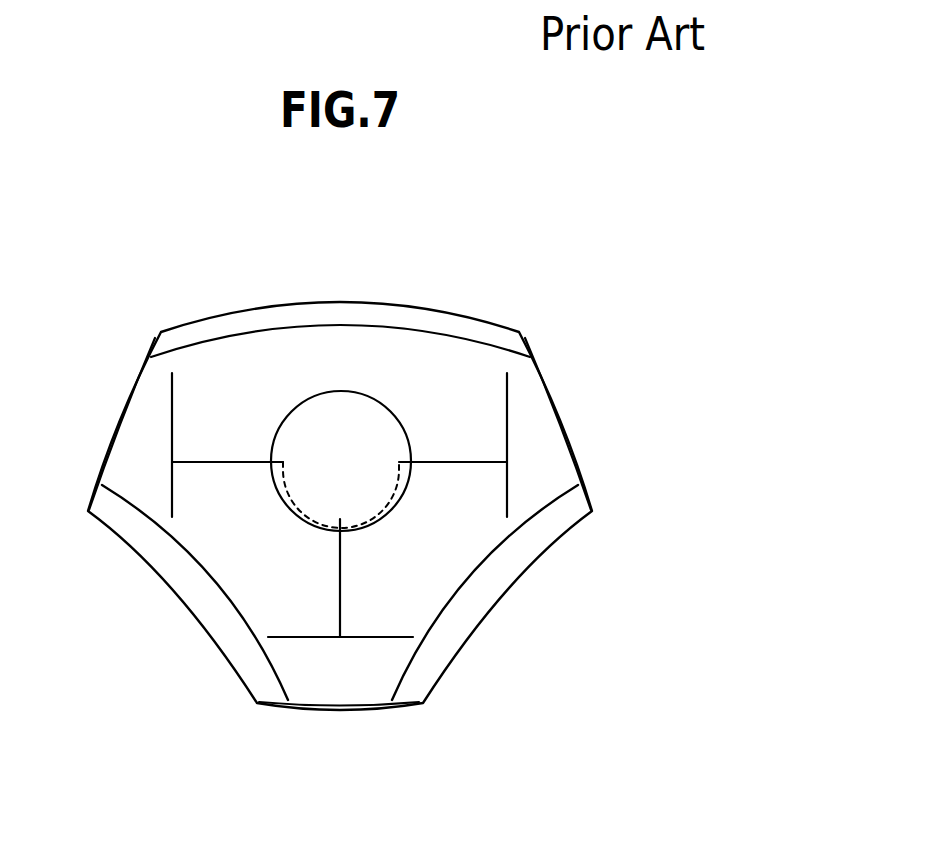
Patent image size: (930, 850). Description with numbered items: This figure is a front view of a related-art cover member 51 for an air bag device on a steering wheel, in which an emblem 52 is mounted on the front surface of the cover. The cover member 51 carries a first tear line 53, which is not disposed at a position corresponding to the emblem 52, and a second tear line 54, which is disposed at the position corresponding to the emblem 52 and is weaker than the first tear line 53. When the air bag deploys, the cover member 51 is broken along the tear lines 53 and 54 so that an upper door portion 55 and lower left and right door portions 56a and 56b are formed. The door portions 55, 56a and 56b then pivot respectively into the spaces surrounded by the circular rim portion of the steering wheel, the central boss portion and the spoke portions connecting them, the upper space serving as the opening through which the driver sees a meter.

The cover member 51 is at (108, 280).
The emblem 52 is at (375, 400).
The first tear line 53 is at (170, 416).
The second tear line 54 is at (382, 503).
The upper door portion 55 is at (227, 388).
The lower left door portion 56a is at (247, 556).
The lower right door portion 56b is at (457, 537).